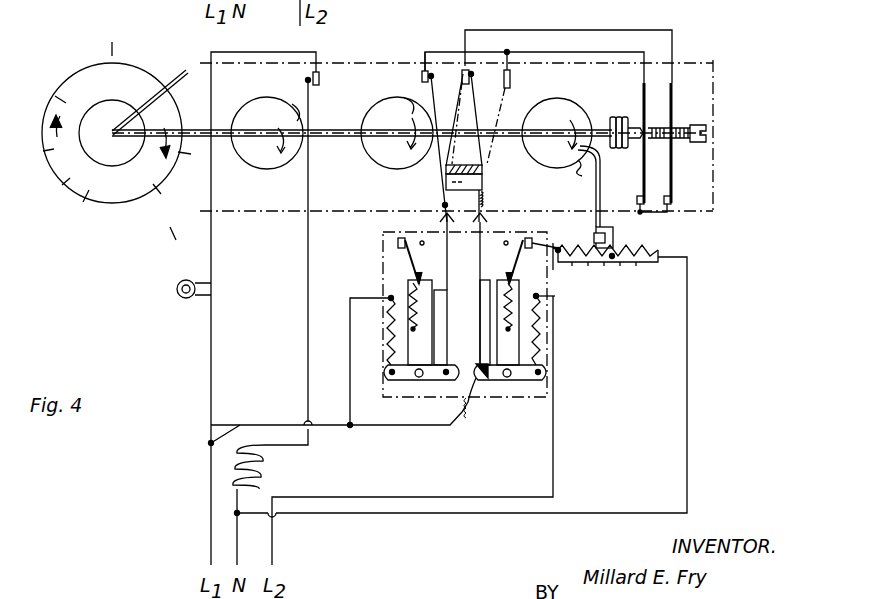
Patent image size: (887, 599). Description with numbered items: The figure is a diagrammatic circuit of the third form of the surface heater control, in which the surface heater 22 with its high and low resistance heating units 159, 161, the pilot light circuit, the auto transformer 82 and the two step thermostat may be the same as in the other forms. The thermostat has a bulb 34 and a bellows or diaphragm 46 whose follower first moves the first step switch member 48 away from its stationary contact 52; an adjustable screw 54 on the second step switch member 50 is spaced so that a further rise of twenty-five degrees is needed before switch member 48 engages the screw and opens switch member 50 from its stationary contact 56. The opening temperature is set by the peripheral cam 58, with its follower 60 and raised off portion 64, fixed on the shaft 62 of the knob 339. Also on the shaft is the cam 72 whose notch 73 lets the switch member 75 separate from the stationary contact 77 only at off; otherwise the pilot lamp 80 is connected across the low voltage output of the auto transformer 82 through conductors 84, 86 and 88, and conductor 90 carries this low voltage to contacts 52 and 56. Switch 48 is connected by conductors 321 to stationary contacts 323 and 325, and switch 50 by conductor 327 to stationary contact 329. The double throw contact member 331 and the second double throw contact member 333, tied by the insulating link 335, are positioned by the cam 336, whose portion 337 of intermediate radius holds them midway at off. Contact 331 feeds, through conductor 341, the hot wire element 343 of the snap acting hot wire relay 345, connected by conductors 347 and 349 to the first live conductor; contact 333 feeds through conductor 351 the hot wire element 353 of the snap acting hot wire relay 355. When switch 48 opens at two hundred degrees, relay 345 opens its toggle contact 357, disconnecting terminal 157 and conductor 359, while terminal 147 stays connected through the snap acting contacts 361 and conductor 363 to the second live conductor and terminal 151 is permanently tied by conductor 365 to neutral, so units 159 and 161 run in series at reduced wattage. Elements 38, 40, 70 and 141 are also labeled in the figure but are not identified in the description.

The surface heater 22 is at (612, 258).
The bulb 34 is at (594, 238).
The terminal 38 is at (600, 196).
The control unit 40 is at (283, 212).
The bellows or diaphragm 46 is at (618, 115).
The first step switch member 48 is at (648, 105).
The second step switch member 50 is at (675, 183).
The stationary contact 52 is at (604, 186).
The adjustable screw 54 is at (698, 124).
The stationary contact 56 is at (665, 196).
The peripheral cam 58 is at (526, 160).
The follower 60 is at (603, 126).
The shaft 62 is at (345, 141).
The raised off portion 64 is at (578, 172).
The pointer 70 is at (156, 93).
The cam 72 is at (283, 160).
The notch 73 is at (296, 108).
The switch member 75 is at (311, 116).
The stationary contact 77 is at (319, 80).
The pilot lamp 80 is at (180, 294).
The auto transformer 82 is at (266, 465).
The conductor 84 is at (308, 336).
The conductor 86 is at (216, 250).
The conductor 88 is at (207, 398).
The conductor 90 is at (555, 208).
The terminal screw 141 is at (419, 368).
The terminal 147 is at (572, 267).
The terminal 151 is at (658, 250).
The terminal 157 is at (614, 234).
The high resistance heating unit 159 is at (590, 272).
The low resistance heating unit 161 is at (634, 270).
The conductors 321 is at (567, 50).
The stationary contact 323 is at (462, 78).
The stationary contact 325 is at (510, 84).
The conductor 327 is at (573, 29).
The stationary contact 329 is at (465, 66).
The double throw contact member 331 is at (443, 182).
The second double throw contact member 333 is at (484, 168).
The insulating link 335 is at (456, 189).
The cam 336 is at (385, 165).
The portion of intermediate radius 337 is at (417, 162).
The knob 339 is at (70, 178).
The conductor 341 is at (466, 251).
The hot wire element 343 is at (450, 312).
The snap acting hot wire relay 345 is at (430, 382).
The conductor 347 is at (345, 300).
The conductor 349 is at (332, 428).
The conductor 351 is at (484, 205).
The hot wire element 353 is at (474, 316).
The snap acting hot wire relay 355 is at (515, 382).
The toggle contact 357 is at (415, 257).
The conductor 359 is at (440, 222).
The snap acting contacts 361 is at (520, 270).
The conductor 363 is at (554, 386).
The conductor 365 is at (688, 337).